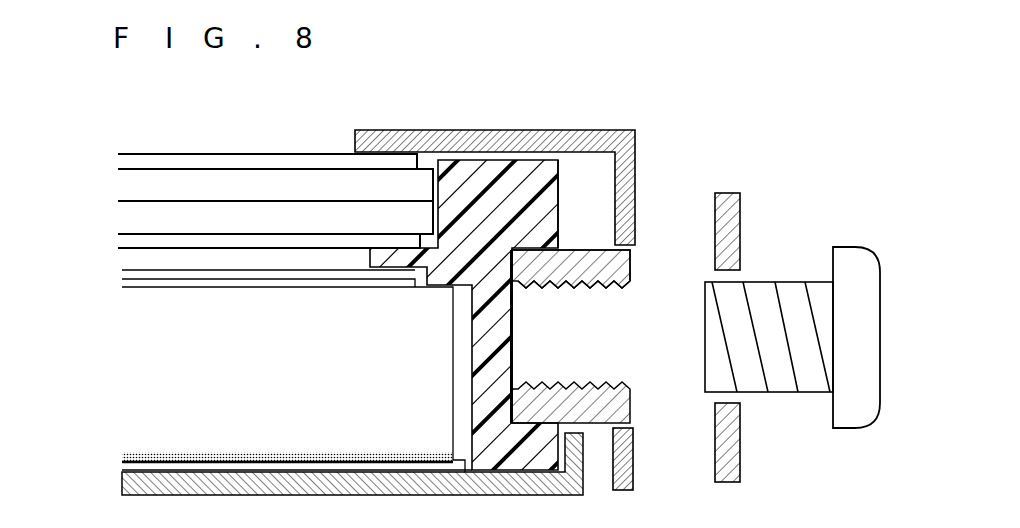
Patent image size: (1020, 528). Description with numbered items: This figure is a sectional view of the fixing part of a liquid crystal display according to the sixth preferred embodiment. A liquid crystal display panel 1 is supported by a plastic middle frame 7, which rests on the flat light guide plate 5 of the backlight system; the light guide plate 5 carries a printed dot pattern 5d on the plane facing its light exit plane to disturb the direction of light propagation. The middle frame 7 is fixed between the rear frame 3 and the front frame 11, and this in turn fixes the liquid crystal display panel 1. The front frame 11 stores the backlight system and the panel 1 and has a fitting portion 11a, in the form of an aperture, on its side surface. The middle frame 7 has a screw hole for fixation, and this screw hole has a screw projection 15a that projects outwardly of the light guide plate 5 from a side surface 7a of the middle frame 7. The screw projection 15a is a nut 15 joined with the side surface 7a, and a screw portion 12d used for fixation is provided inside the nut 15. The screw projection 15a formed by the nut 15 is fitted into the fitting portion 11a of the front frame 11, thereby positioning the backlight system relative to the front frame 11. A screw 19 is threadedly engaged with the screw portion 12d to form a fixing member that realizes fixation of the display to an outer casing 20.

The liquid crystal display panel 1 is at (110, 148).
The rear frame 3 is at (122, 482).
The flat light guide plate 5 is at (142, 367).
The printed dot pattern 5d is at (155, 455).
The middle frame 7 is at (487, 173).
The side surface of the middle frame 7a is at (562, 188).
The front frame 11 is at (637, 198).
The fitting portion 11a is at (632, 427).
The screw portion 12d is at (615, 287).
The nut 15 is at (555, 282).
The screw projection 15a is at (632, 265).
The screw 19 is at (848, 247).
The outer casing 20 is at (738, 218).